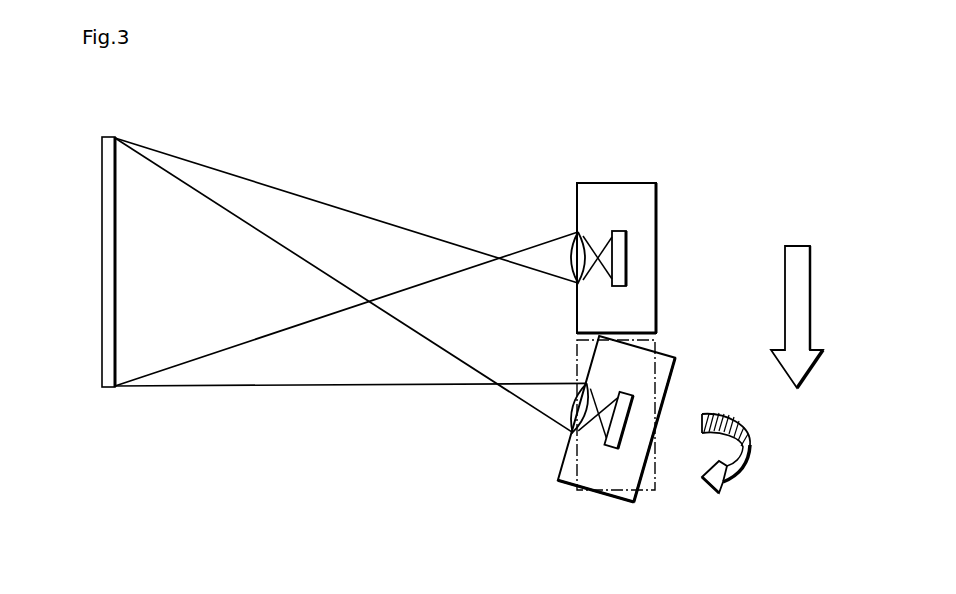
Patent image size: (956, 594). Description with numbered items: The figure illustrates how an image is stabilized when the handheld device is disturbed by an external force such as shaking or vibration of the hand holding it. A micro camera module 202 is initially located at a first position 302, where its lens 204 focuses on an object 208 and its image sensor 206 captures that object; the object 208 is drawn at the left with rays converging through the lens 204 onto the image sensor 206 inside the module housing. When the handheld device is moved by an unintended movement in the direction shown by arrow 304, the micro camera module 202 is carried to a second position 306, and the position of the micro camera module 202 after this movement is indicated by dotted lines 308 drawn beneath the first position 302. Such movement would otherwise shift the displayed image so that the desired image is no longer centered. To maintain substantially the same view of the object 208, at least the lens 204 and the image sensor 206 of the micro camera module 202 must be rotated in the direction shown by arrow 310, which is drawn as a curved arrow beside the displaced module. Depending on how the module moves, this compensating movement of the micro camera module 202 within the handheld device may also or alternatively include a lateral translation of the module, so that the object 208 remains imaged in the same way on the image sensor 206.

The micro camera module 202 is at (618, 184).
The lens 204 is at (578, 233).
The image sensor 206 is at (627, 258).
The object 208 is at (116, 137).
The first position 302 is at (637, 233).
The arrow 304 is at (810, 295).
The second position 306 is at (684, 346).
The dotted lines 308 is at (640, 498).
The arrow 310 is at (750, 455).